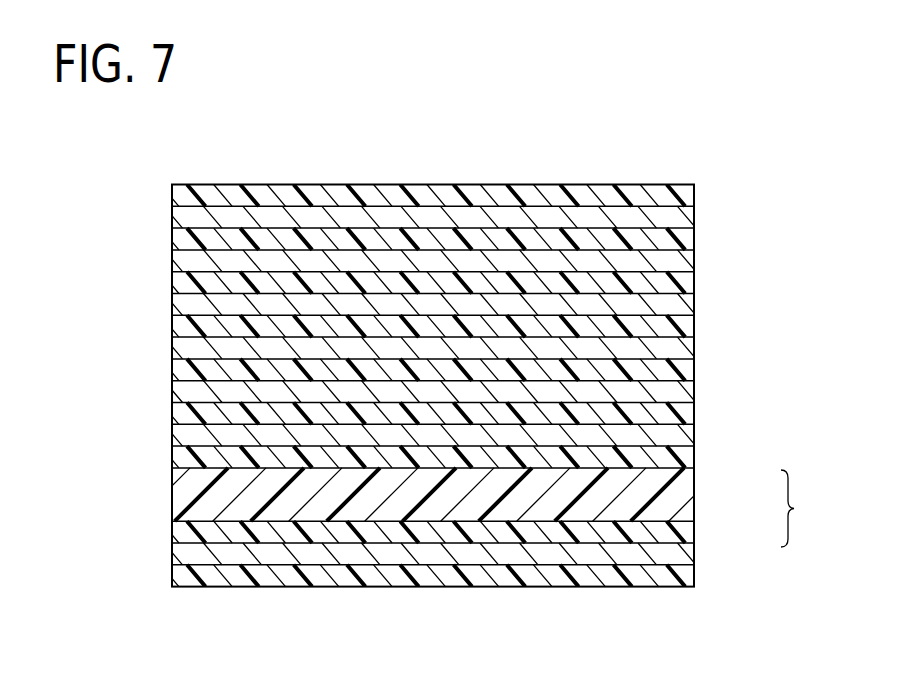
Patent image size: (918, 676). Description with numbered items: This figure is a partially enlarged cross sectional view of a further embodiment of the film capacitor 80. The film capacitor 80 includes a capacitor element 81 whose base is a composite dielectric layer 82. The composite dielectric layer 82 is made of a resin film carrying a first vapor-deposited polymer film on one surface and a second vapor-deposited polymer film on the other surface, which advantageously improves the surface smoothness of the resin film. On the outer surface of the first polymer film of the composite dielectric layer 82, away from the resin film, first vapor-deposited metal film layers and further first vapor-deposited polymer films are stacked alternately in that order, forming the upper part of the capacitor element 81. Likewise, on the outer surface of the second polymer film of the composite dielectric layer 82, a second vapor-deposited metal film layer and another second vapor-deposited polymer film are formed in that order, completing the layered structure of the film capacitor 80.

The film capacitor 80 is at (521, 142).
The capacitor element 81 is at (387, 185).
The composite dielectric layer 82 is at (492, 517).